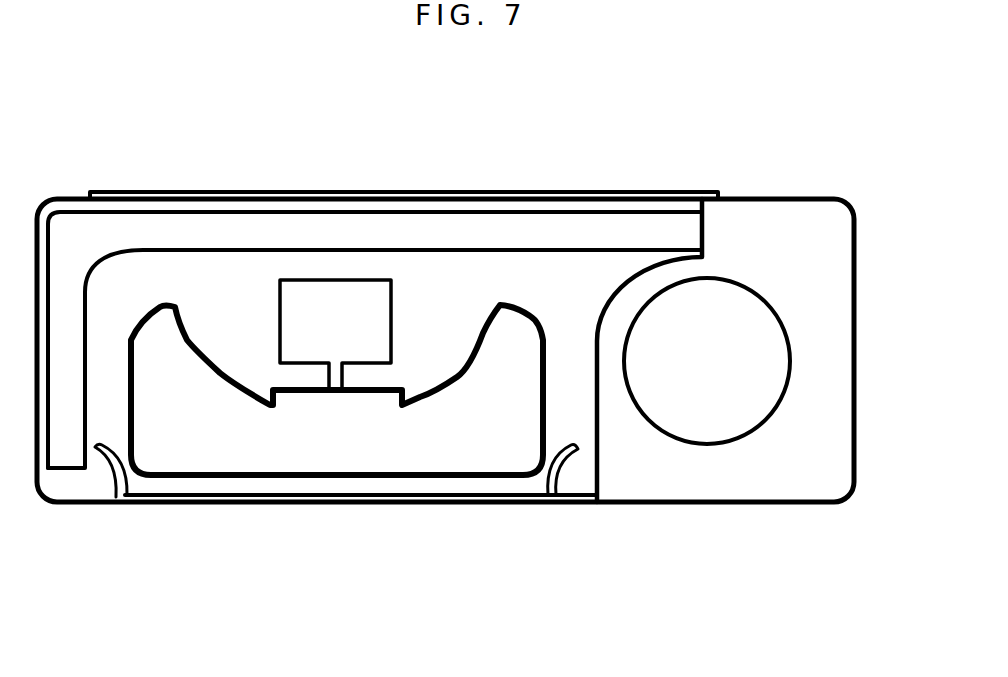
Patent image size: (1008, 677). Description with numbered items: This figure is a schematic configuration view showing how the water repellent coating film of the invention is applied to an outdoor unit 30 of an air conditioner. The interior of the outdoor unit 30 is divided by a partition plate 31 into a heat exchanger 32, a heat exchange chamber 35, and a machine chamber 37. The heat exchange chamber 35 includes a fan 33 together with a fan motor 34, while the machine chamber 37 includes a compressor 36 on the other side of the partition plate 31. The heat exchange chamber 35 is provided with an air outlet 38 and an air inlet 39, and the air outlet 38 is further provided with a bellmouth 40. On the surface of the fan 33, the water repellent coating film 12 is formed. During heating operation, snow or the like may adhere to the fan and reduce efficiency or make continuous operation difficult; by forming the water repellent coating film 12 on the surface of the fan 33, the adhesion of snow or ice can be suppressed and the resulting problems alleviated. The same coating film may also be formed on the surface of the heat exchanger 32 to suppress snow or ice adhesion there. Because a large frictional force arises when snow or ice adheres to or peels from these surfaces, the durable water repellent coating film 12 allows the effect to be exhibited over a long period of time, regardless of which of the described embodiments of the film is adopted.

The water repellent coating film 12 is at (175, 478).
The outdoor unit 30 is at (812, 182).
The partition plate 31 is at (620, 288).
The heat exchanger 32 is at (178, 230).
The fan 33 is at (497, 452).
The fan motor 34 is at (310, 297).
The heat exchange chamber 35 is at (443, 278).
The compressor 36 is at (707, 405).
The machine chamber 37 is at (790, 245).
The air outlet 38 is at (325, 503).
The air inlet 39 is at (392, 192).
The bellmouth 40 is at (557, 477).